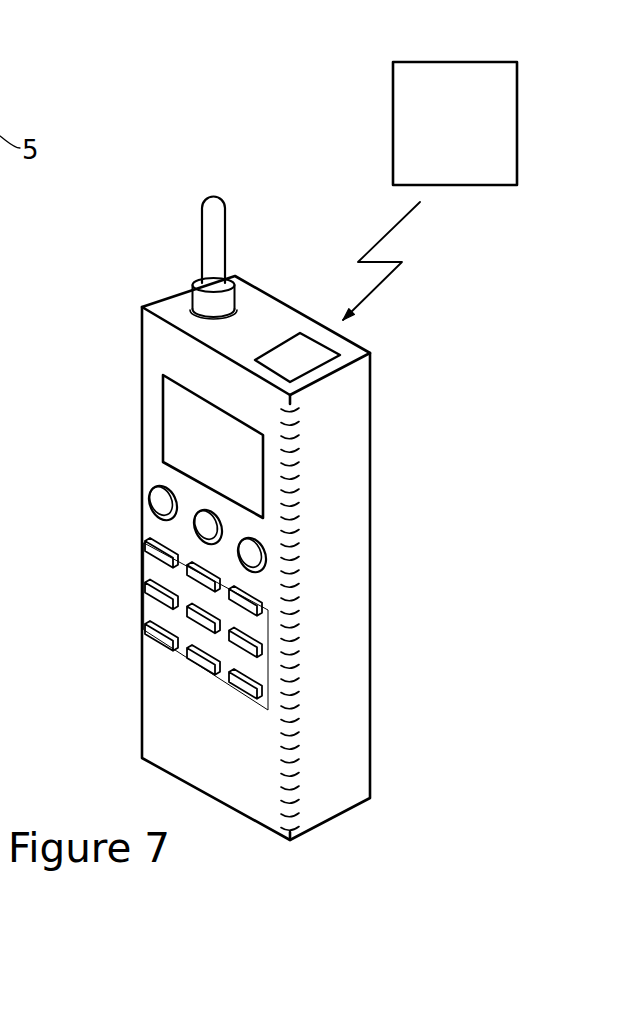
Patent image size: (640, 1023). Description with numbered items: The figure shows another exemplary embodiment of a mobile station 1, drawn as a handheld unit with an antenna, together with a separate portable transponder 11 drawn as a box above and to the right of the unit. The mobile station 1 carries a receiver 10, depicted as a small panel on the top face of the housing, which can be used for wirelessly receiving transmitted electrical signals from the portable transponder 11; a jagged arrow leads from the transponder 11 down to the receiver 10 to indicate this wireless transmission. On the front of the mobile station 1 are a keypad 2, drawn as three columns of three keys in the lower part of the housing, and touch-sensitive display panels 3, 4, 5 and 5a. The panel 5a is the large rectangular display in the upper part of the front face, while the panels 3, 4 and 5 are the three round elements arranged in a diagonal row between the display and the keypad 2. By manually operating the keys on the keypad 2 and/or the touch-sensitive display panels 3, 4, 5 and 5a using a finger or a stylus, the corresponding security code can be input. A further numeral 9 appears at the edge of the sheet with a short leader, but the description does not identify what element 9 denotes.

The mobile station 1 is at (271, 318).
The keypad 2 is at (175, 583).
The touch-sensitive display panel 3 is at (150, 503).
The touch-sensitive display panel 4 is at (194, 538).
The touch-sensitive display panel 5 is at (267, 563).
The touch-sensitive display panel 5a is at (180, 426).
The component of adjacent figure 9 is at (0, 44).
The receiver 10 is at (313, 357).
The portable transponder 11 is at (471, 76).